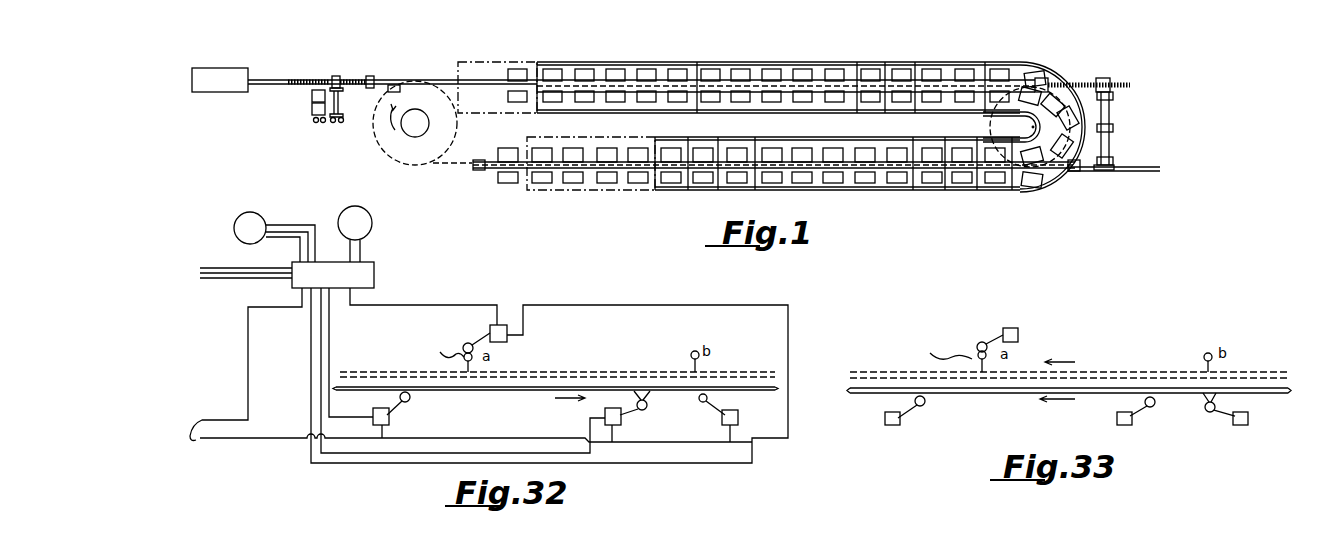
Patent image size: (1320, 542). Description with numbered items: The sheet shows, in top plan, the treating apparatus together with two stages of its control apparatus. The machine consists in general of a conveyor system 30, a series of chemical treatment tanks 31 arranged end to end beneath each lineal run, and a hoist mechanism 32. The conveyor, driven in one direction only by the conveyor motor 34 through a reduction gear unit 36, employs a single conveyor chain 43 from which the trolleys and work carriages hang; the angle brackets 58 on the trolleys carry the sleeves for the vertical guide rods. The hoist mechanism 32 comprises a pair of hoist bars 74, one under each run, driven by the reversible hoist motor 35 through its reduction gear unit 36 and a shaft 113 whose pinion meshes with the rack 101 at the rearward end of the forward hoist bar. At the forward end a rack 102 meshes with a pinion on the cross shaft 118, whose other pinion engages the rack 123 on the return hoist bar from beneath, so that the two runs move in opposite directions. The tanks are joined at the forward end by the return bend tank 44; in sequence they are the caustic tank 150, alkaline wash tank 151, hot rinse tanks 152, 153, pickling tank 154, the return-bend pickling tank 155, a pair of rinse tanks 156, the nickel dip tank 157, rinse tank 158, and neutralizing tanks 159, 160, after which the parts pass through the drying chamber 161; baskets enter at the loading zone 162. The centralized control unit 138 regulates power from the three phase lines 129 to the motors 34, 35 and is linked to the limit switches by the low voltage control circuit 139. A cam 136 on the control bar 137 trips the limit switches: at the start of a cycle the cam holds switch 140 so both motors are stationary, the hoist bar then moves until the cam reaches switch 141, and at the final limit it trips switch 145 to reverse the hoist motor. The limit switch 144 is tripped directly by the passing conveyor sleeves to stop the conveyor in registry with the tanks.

In FIG. 1, the electrical control unit 138 is at (244, 66).
In FIG. 32, the electrical control unit 138 is at (361, 275).
In FIG. 1, the rack 101 is at (324, 77).
In FIG. 1, the hoist mechanism 32 is at (360, 74).
In FIG. 1, the hoist motor 35 is at (312, 96).
In FIG. 32, the hoist motor 35 is at (270, 217).
In FIG. 1, the reduction gear unit 36 is at (312, 109).
In FIG. 1, the shaft 113 is at (341, 94).
In FIG. 1, the hoist bar 74 is at (408, 82).
In FIG. 1, the conveyor system 30 is at (376, 134).
In FIG. 1, the conveyor motor 34 is at (429, 124).
In FIG. 32, the conveyor motor 34 is at (358, 208).
In FIG. 1, the conveyor chain 43 is at (452, 166).
In FIG. 32, the conveyor chain 43 is at (626, 356).
In FIG. 33, the conveyor chain 43 is at (1118, 356).
In FIG. 1, the loading zone 162 is at (464, 62).
In FIG. 1, the drying chamber 161 is at (613, 192).
In FIG. 1, the chemical treatment tanks 31 is at (696, 55).
In FIG. 1, the first tank 150 is at (580, 62).
In FIG. 1, the second tank 151 is at (792, 66).
In FIG. 1, the hot rinse tank 152 is at (873, 66).
In FIG. 1, the hot rinse tank 153 is at (899, 66).
In FIG. 1, the pickling tank 154 is at (980, 48).
In FIG. 1, the second pickling tank 155 is at (1054, 66).
In FIG. 1, the rinse tanks 156 is at (936, 188).
In FIG. 1, the nickel dip tank 157 is at (848, 188).
In FIG. 1, the rinse tank 158 is at (748, 188).
In FIG. 1, the neutralizing tank 159 is at (720, 188).
In FIG. 1, the neutralizing tank 160 is at (672, 188).
In FIG. 1, the return bend tank 44 is at (1090, 62).
In FIG. 1, the rack 102 is at (1108, 73).
In FIG. 1, the cross shaft 118 is at (1112, 102).
In FIG. 1, the rack 123 is at (1118, 172).
In FIG. 32, the three phase power lines 129 is at (238, 282).
In FIG. 32, the limit switch control circuit 139 is at (240, 438).
In FIG. 32, the limit switch 144 is at (492, 333).
In FIG. 33, the limit switch 144 is at (1018, 336).
In FIG. 32, the angle brackets 58 is at (440, 352).
In FIG. 33, the angle brackets 58 is at (930, 353).
In FIG. 32, the control bar 137 is at (522, 392).
In FIG. 32, the cam 136 is at (647, 404).
In FIG. 33, the cam 136 is at (1205, 407).
In FIG. 32, the limit switch 140 is at (621, 424).
In FIG. 33, the limit switch 140 is at (1118, 420).
In FIG. 32, the limit switch 141 is at (735, 413).
In FIG. 33, the limit switch 141 is at (1248, 419).
In FIG. 32, the limit switch 145 is at (389, 418).
In FIG. 33, the limit switch 145 is at (905, 417).